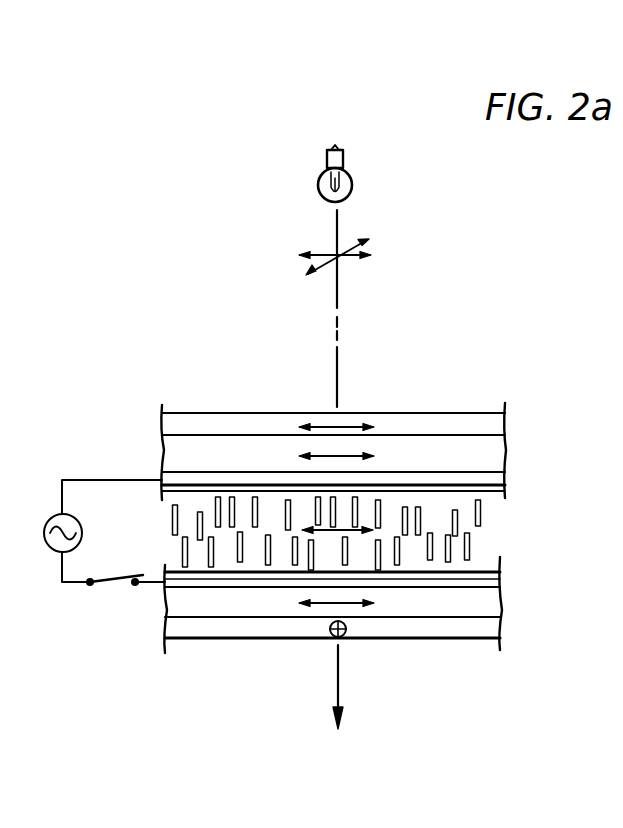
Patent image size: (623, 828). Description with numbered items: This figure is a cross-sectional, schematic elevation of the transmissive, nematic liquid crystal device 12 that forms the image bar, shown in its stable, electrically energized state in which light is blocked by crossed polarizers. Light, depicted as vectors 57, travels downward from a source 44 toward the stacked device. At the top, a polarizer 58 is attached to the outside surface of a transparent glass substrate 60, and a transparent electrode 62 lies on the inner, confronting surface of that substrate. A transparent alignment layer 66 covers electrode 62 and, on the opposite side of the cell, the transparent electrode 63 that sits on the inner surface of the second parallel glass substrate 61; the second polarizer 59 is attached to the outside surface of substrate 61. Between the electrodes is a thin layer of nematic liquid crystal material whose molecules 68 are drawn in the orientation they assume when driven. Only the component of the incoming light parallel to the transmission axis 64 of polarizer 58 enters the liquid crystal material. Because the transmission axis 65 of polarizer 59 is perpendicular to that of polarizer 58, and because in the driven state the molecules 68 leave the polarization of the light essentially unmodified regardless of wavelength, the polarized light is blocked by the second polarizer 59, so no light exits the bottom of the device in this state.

The light source 44 is at (354, 179).
The light vectors 57 is at (354, 262).
The liquid crystal device 12 is at (419, 373).
The transmission axis of polarizer 58 64 is at (349, 424).
The polarizer 58 is at (505, 418).
The glass substrate 60 is at (492, 455).
The transparent electrode 62 is at (505, 476).
The alignment layer 66 is at (505, 487).
The liquid crystal molecules 68 is at (478, 515).
The transparent electrode 63 is at (500, 582).
The glass substrate 61 is at (488, 605).
The polarizer 59 is at (480, 630).
The transmission axis of polarizer 59 65 is at (340, 640).